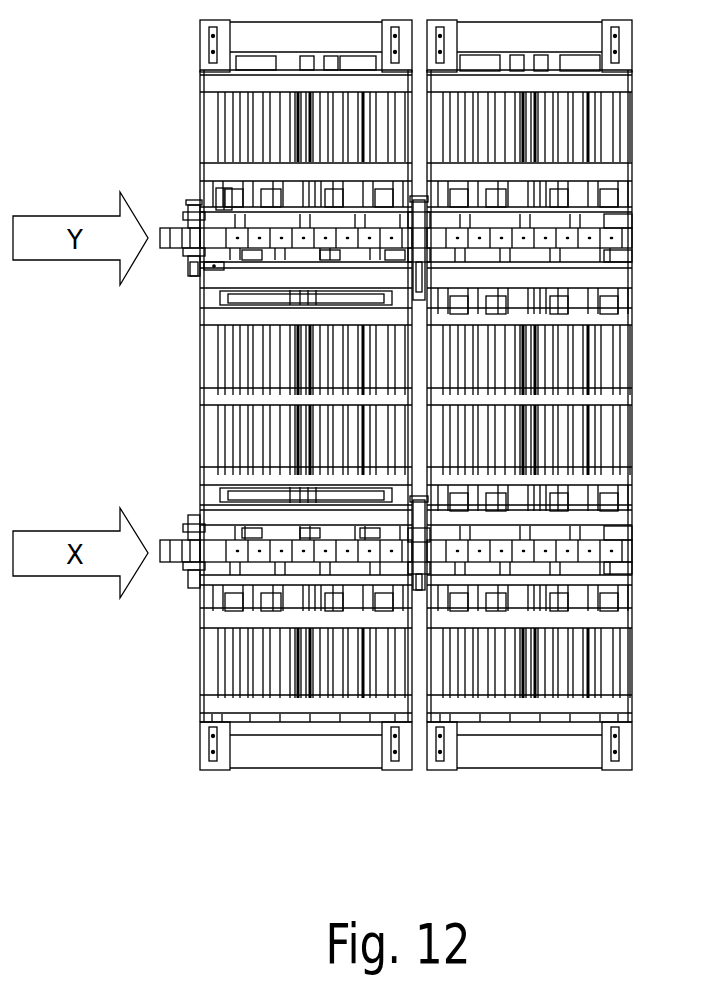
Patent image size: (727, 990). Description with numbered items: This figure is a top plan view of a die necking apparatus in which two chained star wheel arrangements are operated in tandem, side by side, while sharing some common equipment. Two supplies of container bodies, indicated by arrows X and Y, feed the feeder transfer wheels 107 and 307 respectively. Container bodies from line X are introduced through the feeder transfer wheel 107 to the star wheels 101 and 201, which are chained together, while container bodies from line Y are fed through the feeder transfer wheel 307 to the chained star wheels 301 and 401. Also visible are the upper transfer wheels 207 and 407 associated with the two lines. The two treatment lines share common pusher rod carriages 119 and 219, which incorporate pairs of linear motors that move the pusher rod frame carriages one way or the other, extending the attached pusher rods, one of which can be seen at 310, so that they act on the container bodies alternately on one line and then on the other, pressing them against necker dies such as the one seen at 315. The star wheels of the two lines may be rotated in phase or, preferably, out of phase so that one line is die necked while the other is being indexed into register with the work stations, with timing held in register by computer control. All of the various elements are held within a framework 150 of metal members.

The star wheel 101 is at (232, 540).
The feeder transfer wheel 107 is at (162, 540).
The pusher rod carriage 119 is at (235, 360).
The framework 150 is at (262, 763).
The star wheel 201 is at (628, 542).
The upper transfer wheel 207 is at (430, 540).
The pusher rod carriage 219 is at (610, 358).
The star wheel 301 is at (292, 250).
The feeder transfer wheel 307 is at (170, 230).
The pusher rod 310 is at (206, 268).
The necker die 315 is at (222, 200).
The star wheel 401 is at (610, 240).
The upper transfer wheel 407 is at (428, 255).